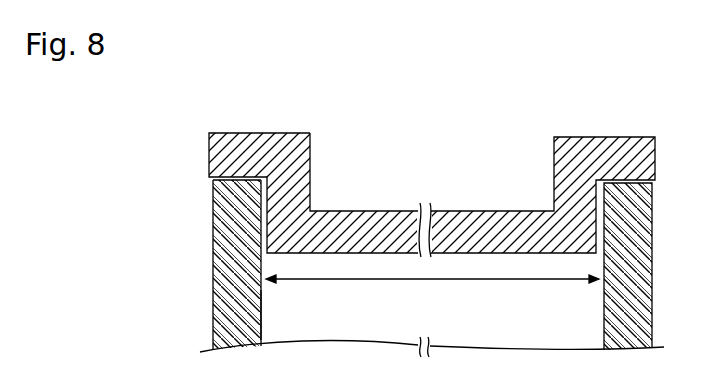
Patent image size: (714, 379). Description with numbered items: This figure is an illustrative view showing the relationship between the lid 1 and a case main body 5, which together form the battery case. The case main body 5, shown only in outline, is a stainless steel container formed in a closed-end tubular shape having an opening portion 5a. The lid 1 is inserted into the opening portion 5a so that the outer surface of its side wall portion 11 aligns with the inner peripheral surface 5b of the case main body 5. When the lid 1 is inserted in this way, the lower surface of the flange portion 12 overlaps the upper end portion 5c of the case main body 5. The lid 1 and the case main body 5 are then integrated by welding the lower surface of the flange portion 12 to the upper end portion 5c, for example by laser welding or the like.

The lid 1 is at (432, 170).
The side wall portion 11 is at (311, 188).
The flange portion 12 is at (230, 133).
The case main body 5 is at (434, 240).
The opening portion 5a is at (400, 279).
The inner peripheral surface 5b is at (262, 313).
The upper end portion 5c is at (235, 182).